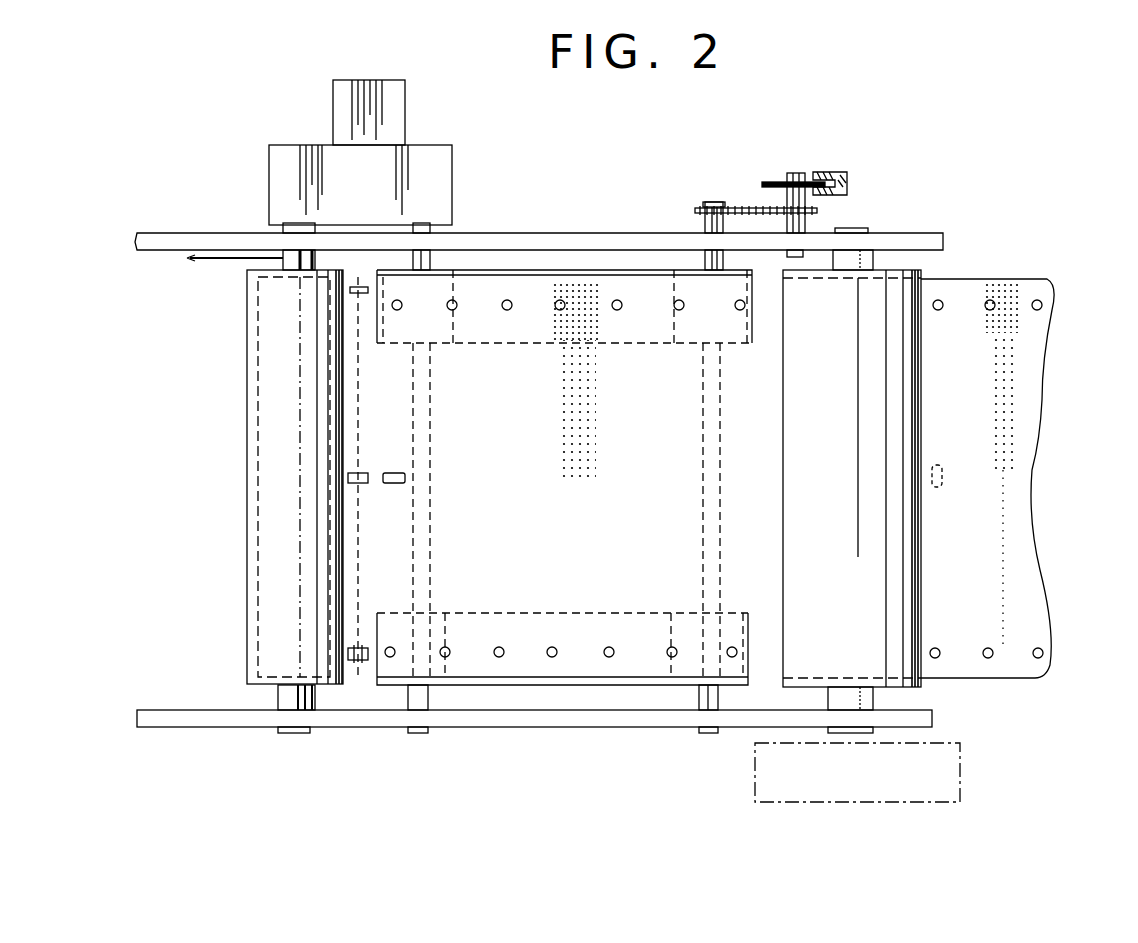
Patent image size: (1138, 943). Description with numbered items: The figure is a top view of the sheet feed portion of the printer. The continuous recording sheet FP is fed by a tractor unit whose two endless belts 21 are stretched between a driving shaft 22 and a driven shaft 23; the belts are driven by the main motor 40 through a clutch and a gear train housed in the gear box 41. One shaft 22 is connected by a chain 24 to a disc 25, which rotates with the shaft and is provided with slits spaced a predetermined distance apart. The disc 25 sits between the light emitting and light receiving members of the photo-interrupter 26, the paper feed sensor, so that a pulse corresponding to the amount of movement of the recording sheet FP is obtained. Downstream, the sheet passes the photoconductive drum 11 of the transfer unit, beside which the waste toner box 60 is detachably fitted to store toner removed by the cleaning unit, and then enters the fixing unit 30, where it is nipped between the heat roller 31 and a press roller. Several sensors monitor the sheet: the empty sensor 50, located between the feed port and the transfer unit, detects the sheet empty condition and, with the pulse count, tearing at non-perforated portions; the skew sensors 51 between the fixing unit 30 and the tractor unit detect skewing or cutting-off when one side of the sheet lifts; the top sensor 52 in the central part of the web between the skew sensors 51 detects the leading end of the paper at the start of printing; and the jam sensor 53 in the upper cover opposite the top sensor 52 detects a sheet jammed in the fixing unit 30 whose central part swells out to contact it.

The photoconductive drum 11 is at (880, 557).
The endless belts 21 is at (565, 268).
The driving shaft 22 is at (706, 262).
The driven shaft 23 is at (432, 262).
The chain 24 is at (745, 208).
The disc 25 is at (790, 182).
The photo-interrupter 26 is at (848, 190).
The fixing unit 30 is at (237, 518).
The heat roller 31 is at (272, 452).
The main motor 40 is at (405, 105).
The gear box 41 is at (452, 162).
The empty sensor 50 is at (938, 463).
The skew sensors 51 is at (348, 291).
The top sensor 52 is at (358, 485).
The jam sensor 53 is at (392, 472).
The waste toner box 60 is at (755, 780).
The recording sheet FP is at (1027, 428).